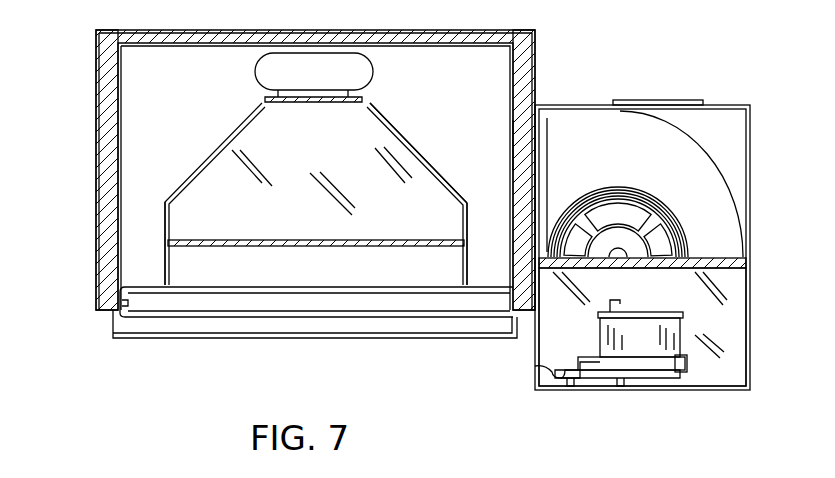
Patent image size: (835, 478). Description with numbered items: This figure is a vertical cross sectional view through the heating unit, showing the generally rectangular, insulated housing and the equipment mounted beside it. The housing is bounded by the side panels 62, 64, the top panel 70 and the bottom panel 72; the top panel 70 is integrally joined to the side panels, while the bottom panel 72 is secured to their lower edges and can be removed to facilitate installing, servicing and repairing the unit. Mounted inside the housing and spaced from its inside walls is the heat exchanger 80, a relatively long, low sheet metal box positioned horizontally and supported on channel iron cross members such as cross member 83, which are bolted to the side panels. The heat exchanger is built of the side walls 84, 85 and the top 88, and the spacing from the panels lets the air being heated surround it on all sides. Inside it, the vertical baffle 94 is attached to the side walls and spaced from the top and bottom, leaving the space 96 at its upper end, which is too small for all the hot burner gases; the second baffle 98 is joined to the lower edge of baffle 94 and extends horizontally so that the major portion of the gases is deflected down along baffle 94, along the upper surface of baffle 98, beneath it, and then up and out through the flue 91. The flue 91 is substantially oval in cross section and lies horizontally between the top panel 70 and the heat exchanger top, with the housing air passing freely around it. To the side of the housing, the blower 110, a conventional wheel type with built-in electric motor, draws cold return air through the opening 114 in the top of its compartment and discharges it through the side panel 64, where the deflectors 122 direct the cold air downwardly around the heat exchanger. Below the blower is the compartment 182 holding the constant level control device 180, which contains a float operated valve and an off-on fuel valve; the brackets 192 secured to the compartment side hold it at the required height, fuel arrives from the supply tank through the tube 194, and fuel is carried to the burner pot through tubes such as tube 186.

The top panel 70 is at (427, 31).
The side panel 62 is at (105, 143).
The side panel 64 is at (527, 95).
The deflectors 122 is at (495, 165).
The heat exchanger 80 is at (312, 194).
The space 96 is at (262, 102).
The top 88 is at (362, 97).
The flue 91 is at (373, 72).
The vertical baffle 94 is at (421, 162).
The wall 84 is at (165, 226).
The wall 85 is at (468, 222).
The second baffle 98 is at (375, 245).
The cross member 83 is at (152, 264).
The bottom panel 72 is at (383, 331).
The blower 110 is at (725, 211).
The opening 114 is at (693, 99).
The compartment 182 is at (735, 304).
The constant level control device 180 is at (643, 325).
The brackets 192 is at (535, 367).
The tube 194 is at (572, 388).
The tube 186 is at (621, 390).